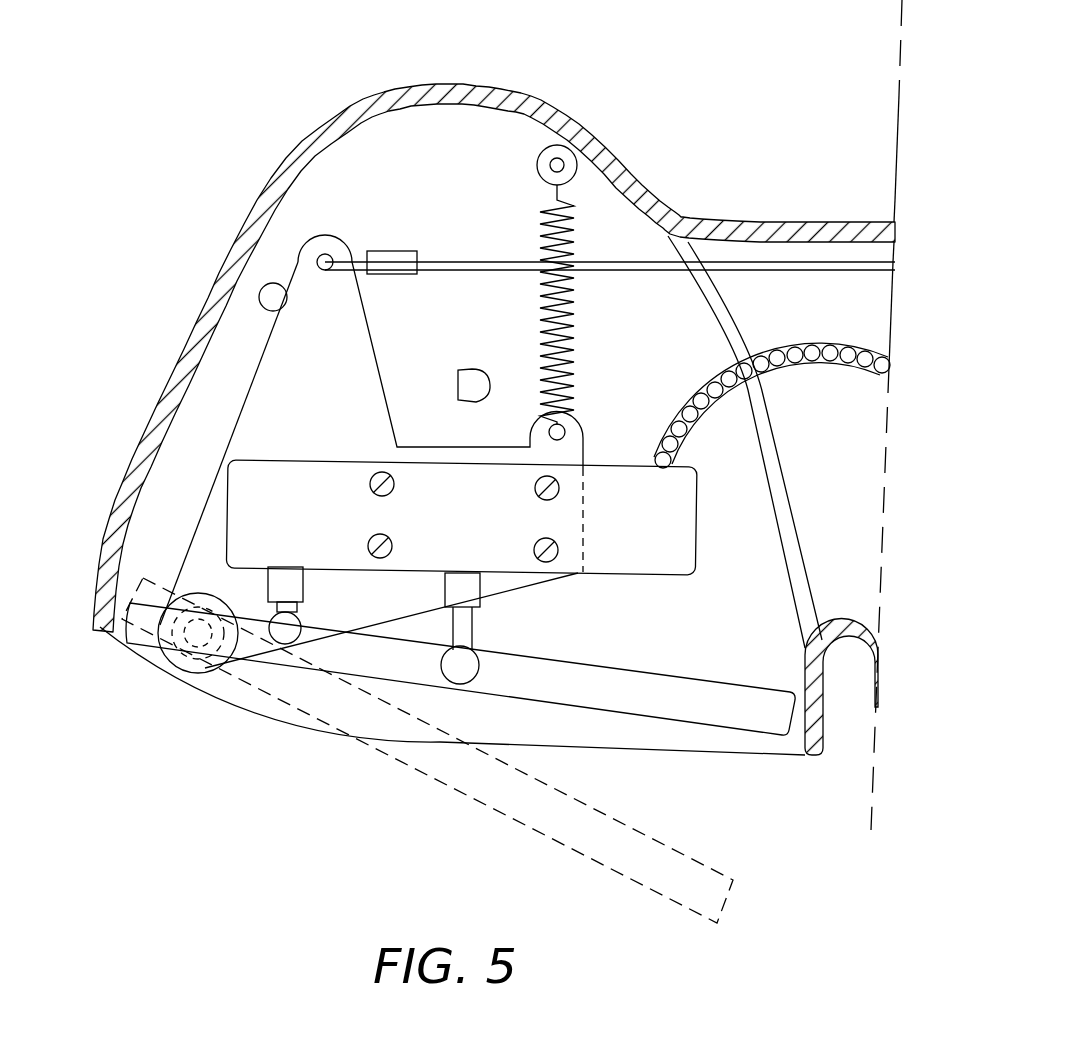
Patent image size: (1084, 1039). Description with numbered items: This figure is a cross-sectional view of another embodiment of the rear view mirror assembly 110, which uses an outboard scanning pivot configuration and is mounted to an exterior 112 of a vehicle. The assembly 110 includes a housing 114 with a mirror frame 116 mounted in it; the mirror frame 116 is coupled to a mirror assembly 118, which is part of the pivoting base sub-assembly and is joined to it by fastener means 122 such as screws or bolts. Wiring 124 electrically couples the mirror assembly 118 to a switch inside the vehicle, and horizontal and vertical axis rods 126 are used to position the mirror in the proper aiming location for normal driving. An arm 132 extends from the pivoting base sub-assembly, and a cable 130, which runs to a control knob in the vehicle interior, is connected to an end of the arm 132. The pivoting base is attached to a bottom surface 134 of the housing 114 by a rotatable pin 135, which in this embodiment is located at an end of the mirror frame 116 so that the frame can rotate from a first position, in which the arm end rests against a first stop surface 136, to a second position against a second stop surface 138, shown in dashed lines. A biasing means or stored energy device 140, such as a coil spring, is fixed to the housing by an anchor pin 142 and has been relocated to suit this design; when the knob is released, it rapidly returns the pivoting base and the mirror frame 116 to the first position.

The rear view mirror assembly 110 is at (221, 118).
The exterior of vehicle 112 is at (898, 117).
The housing 114 is at (540, 112).
The mirror frame 116 is at (582, 662).
The mirror assembly 118 is at (673, 510).
The fastener means 122 is at (392, 477).
The wiring 124 is at (805, 340).
The horizontal and vertical axis rods 126 is at (446, 586).
The cable 130 is at (597, 259).
The arm 132 is at (356, 324).
The bottom surface of housing 134 is at (413, 145).
The rotatable pin 135 is at (200, 637).
The first stop surface 136 is at (258, 300).
The second stop surface 138 is at (487, 396).
The biasing means 140 is at (576, 320).
The anchor pin 142 is at (552, 164).